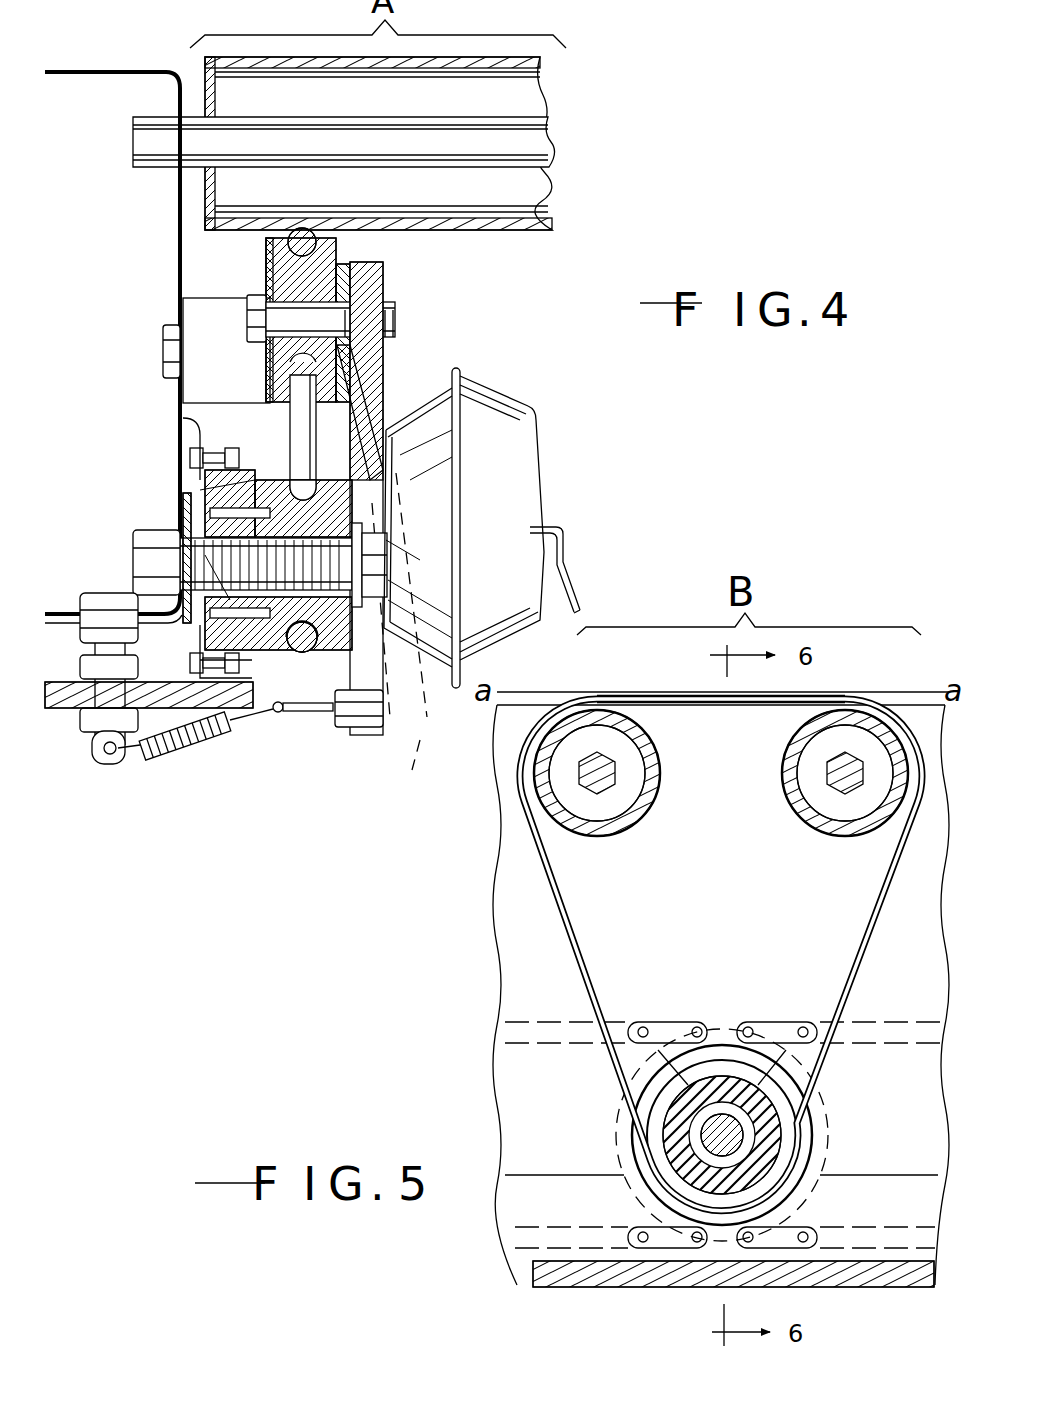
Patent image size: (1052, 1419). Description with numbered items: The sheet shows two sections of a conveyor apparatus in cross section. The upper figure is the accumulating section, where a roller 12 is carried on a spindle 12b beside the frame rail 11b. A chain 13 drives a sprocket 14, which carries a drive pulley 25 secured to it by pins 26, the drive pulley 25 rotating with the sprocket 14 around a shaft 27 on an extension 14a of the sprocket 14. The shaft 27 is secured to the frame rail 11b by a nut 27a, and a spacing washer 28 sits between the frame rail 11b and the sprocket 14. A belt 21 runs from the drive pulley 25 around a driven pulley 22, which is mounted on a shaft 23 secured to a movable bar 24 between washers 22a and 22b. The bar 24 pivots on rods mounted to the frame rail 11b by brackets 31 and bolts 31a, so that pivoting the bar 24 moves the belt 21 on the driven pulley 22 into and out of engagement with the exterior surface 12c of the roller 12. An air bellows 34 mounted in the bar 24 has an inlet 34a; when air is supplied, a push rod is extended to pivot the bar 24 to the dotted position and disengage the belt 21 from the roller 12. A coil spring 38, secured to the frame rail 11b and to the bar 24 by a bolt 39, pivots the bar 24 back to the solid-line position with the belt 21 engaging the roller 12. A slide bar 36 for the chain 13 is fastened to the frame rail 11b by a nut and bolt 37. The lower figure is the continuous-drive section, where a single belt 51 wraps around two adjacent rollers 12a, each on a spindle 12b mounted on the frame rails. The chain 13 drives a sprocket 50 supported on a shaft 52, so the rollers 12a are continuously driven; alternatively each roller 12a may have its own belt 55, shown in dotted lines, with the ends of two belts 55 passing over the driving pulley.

In FIG. 4, the roller 12 is at (540, 62).
In FIG. 5, the roller 12a is at (600, 715).
In FIG. 4, the spindle 12b is at (133, 148).
In FIG. 5, the spindle 12b is at (830, 771).
In FIG. 5, the exterior surface 12c is at (765, 772).
In FIG. 4, the frame rail 11b is at (180, 262).
In FIG. 4, the chain 13 is at (183, 420).
In FIG. 4, the sprocket 14 is at (220, 482).
In FIG. 4, the extension 14a is at (367, 488).
In FIG. 4, the belt 21 is at (318, 242).
In FIG. 4, the driven pulley 22 is at (337, 294).
In FIG. 4, the washer 22a is at (266, 271).
In FIG. 4, the washer 22b is at (350, 290).
In FIG. 4, the shaft 23 is at (395, 325).
In FIG. 4, the movable bar 24 is at (383, 360).
In FIG. 4, the drive pulley 25 is at (282, 707).
In FIG. 4, the pins 26 is at (237, 487).
In FIG. 4, the shaft 27 is at (200, 555).
In FIG. 4, the nut 27a is at (158, 564).
In FIG. 4, the spacing washer 28 is at (185, 500).
In FIG. 4, the bracket 31 is at (212, 312).
In FIG. 4, the bolt 31a is at (163, 353).
In FIG. 4, the air bellows 34 is at (540, 426).
In FIG. 4, the inlet 34a is at (563, 550).
In FIG. 4, the slide bar 36 is at (62, 708).
In FIG. 4, the nut and bolt 37 is at (76, 618).
In FIG. 4, the coil spring 38 is at (297, 712).
In FIG. 4, the bolt 39 is at (346, 727).
In FIG. 5, the sprocket 50 is at (745, 1065).
In FIG. 5, the belt 51 is at (858, 925).
In FIG. 5, the shaft 52 is at (738, 1138).
In FIG. 5, the belt 55 is at (721, 812).